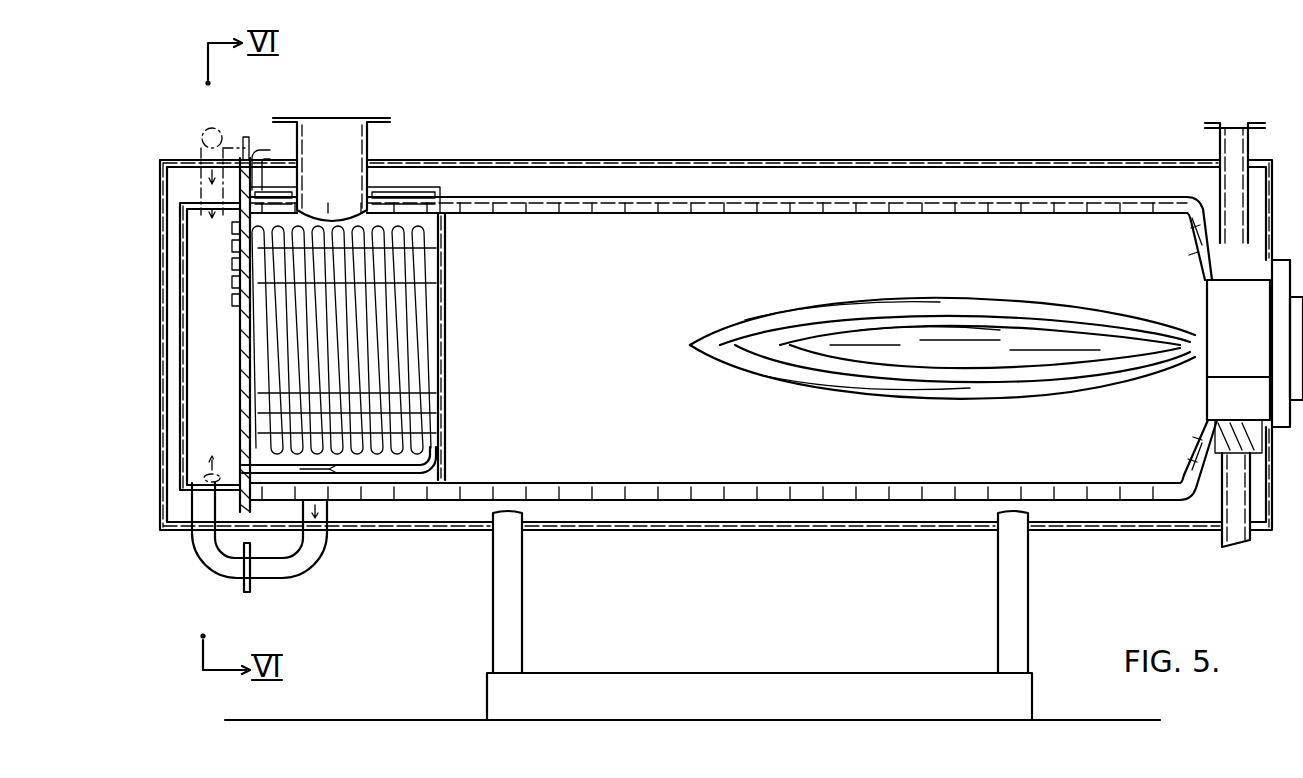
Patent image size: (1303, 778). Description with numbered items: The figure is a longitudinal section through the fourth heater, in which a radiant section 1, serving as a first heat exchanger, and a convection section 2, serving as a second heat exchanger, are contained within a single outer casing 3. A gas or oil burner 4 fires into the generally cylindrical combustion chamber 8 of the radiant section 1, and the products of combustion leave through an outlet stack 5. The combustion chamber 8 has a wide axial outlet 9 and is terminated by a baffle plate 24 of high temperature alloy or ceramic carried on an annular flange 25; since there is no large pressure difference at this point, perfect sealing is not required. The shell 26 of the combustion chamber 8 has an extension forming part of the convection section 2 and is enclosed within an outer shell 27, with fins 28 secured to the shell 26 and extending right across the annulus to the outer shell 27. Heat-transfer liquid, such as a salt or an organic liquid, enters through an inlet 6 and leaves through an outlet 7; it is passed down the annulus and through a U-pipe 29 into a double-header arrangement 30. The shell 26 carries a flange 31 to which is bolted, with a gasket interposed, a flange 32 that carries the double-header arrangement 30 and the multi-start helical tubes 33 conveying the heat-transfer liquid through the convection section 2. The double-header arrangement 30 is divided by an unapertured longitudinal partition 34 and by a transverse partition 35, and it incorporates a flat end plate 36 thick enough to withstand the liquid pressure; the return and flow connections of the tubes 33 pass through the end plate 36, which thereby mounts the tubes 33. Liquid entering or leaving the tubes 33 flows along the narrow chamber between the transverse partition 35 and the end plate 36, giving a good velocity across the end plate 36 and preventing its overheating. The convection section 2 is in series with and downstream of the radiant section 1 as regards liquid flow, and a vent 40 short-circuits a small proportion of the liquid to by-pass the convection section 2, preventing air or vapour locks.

The radiant section 1 is at (838, 186).
The convection section 2 is at (383, 205).
The outer casing 3 is at (1103, 165).
The burner 4 is at (1195, 330).
The outlet stack 5 is at (328, 137).
The inlet 6 is at (1240, 150).
The outlet 7 is at (204, 128).
The combustion chamber 8 is at (722, 288).
The axial outlet 9 is at (450, 345).
The baffle plate 24 is at (447, 268).
The annular flange 25 is at (425, 482).
The shell 26 is at (905, 207).
The outer shell 27 is at (657, 199).
The fins 28 is at (1008, 212).
The U-pipe 29 is at (227, 573).
The double-header arrangement 30 is at (172, 311).
The flange 31 is at (264, 145).
The flange 32 is at (249, 490).
The multi-start helical tubes 33 is at (262, 368).
The longitudinal partition 34 is at (213, 343).
The transverse partition 35 is at (247, 410).
The end plate 36 is at (243, 300).
The vent 40 is at (247, 136).